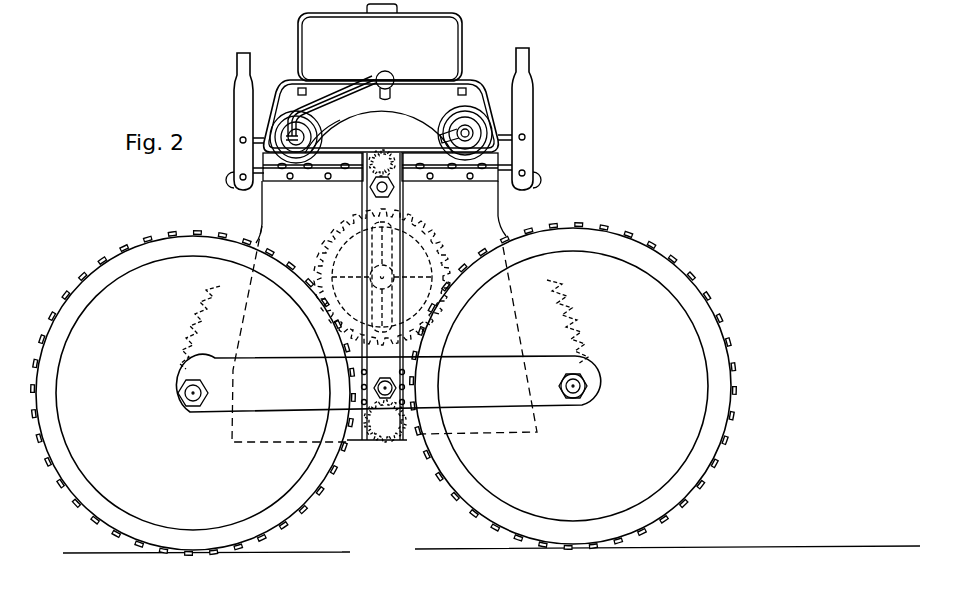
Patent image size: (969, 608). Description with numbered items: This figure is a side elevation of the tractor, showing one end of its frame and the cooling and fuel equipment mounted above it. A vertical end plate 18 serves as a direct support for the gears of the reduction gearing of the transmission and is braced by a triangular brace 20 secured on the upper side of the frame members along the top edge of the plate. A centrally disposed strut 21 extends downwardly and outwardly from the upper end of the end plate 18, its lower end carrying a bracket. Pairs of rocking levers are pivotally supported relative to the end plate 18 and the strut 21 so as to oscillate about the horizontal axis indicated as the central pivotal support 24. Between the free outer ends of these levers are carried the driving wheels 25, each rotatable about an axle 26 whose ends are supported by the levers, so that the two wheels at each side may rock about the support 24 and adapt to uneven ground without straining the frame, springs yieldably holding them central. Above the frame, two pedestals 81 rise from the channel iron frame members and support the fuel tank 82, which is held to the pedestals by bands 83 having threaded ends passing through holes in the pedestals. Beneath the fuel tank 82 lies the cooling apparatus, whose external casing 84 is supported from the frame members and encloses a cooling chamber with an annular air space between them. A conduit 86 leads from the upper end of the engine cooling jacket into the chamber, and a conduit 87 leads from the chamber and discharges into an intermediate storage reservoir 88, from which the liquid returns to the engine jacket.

The end plate 18 is at (486, 218).
The triangular brace 20 is at (340, 158).
The strut 21 is at (404, 216).
The central pivotal support 24 is at (380, 400).
The driving wheel 25 is at (478, 516).
The axle 26 is at (186, 397).
The pedestal 81 is at (500, 70).
The fuel tank 82 is at (432, 42).
The band 83 is at (462, 43).
The external casing 84 is at (284, 108).
The conduit 86 is at (375, 69).
The conduit 87 is at (463, 110).
The intermediate storage reservoir 88 is at (485, 126).